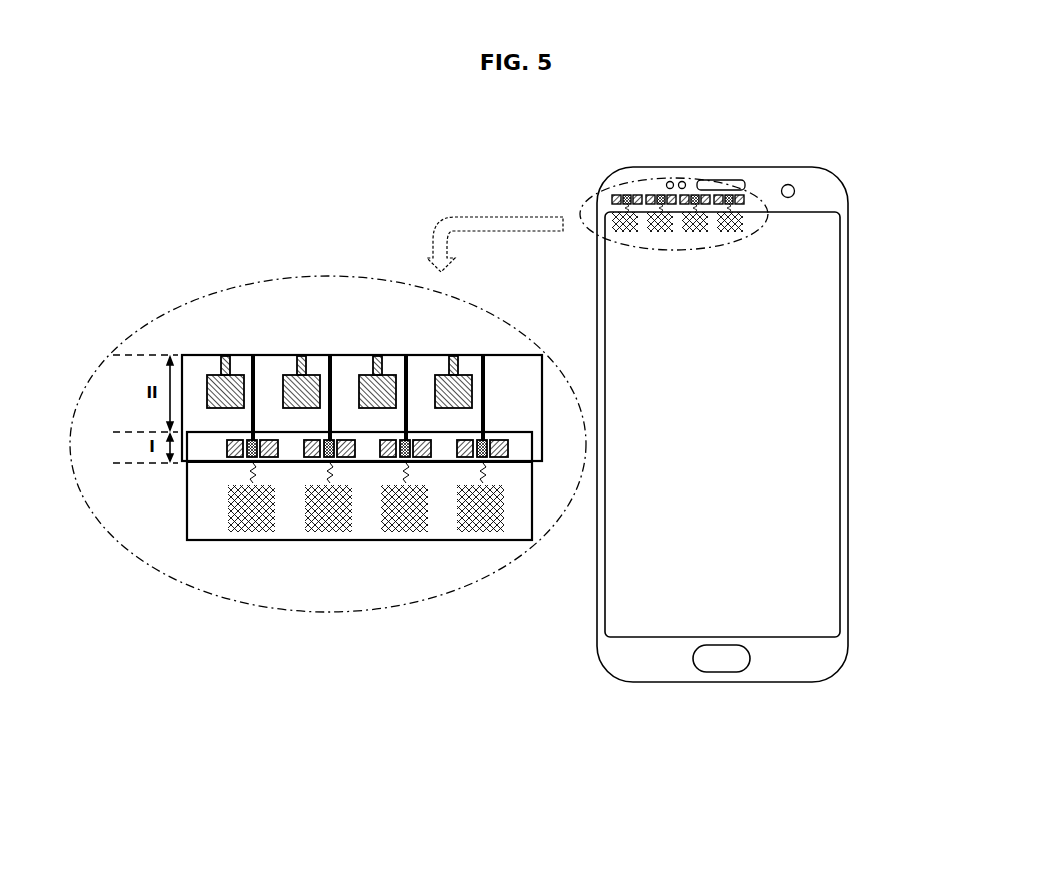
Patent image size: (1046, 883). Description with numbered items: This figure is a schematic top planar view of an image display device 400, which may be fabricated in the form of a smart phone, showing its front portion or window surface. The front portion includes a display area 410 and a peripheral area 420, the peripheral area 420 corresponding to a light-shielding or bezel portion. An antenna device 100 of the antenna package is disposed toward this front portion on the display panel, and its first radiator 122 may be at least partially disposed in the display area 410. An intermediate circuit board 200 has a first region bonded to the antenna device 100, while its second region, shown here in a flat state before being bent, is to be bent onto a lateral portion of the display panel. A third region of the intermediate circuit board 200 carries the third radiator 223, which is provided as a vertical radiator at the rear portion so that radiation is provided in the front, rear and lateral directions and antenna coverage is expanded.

The antenna device 100 is at (359, 542).
The first radiator 122 is at (478, 524).
The intermediate circuit board 200 is at (362, 363).
The third radiator 223 is at (435, 378).
The image display device 400 is at (498, 139).
The display area 410 is at (822, 492).
The peripheral area 420 is at (783, 670).